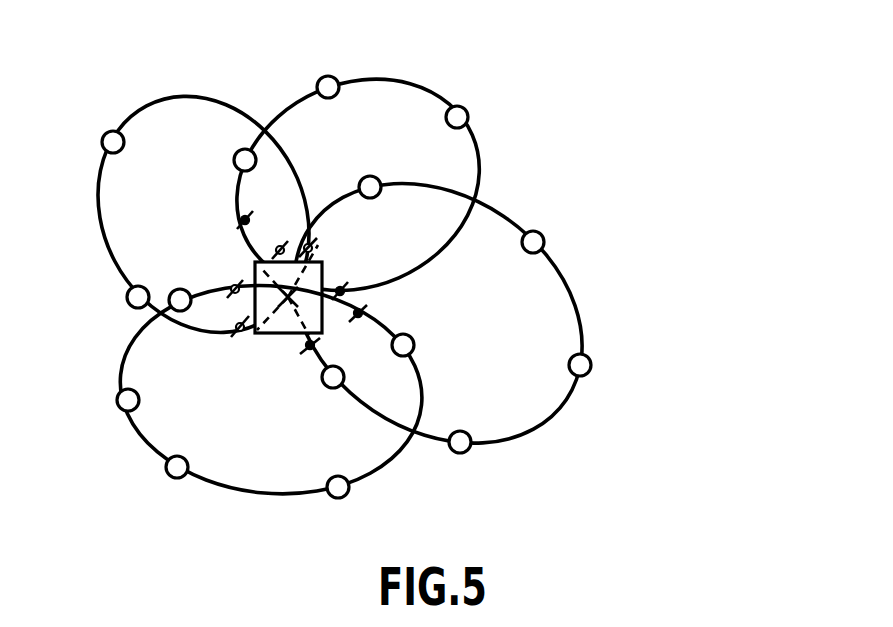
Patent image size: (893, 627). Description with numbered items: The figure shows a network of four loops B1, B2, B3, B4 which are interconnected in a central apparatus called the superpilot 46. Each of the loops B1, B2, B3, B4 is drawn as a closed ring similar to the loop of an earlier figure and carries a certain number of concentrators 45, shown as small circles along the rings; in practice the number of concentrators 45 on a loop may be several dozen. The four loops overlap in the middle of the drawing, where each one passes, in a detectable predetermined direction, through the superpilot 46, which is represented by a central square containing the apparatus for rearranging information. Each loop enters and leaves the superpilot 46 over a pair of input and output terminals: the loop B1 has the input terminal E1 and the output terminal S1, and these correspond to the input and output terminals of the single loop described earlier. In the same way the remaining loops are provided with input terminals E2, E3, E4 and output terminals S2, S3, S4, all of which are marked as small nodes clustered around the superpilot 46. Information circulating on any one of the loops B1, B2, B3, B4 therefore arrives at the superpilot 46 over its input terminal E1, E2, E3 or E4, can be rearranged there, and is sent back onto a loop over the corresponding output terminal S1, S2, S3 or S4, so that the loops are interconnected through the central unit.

The loop B1 is at (572, 290).
The loop B2 is at (92, 232).
The loop B3 is at (395, 82).
The loop B4 is at (247, 494).
The concentrators 45 is at (468, 120).
The superpilot 46 is at (259, 331).
The output terminal S1 is at (293, 361).
The output terminal S2 is at (328, 230).
The output terminal S3 is at (221, 207).
The output terminal S4 is at (384, 308).
The input terminal E1 is at (273, 231).
The input terminal E2 is at (220, 347).
The input terminal E3 is at (347, 275).
The input terminal E4 is at (225, 273).